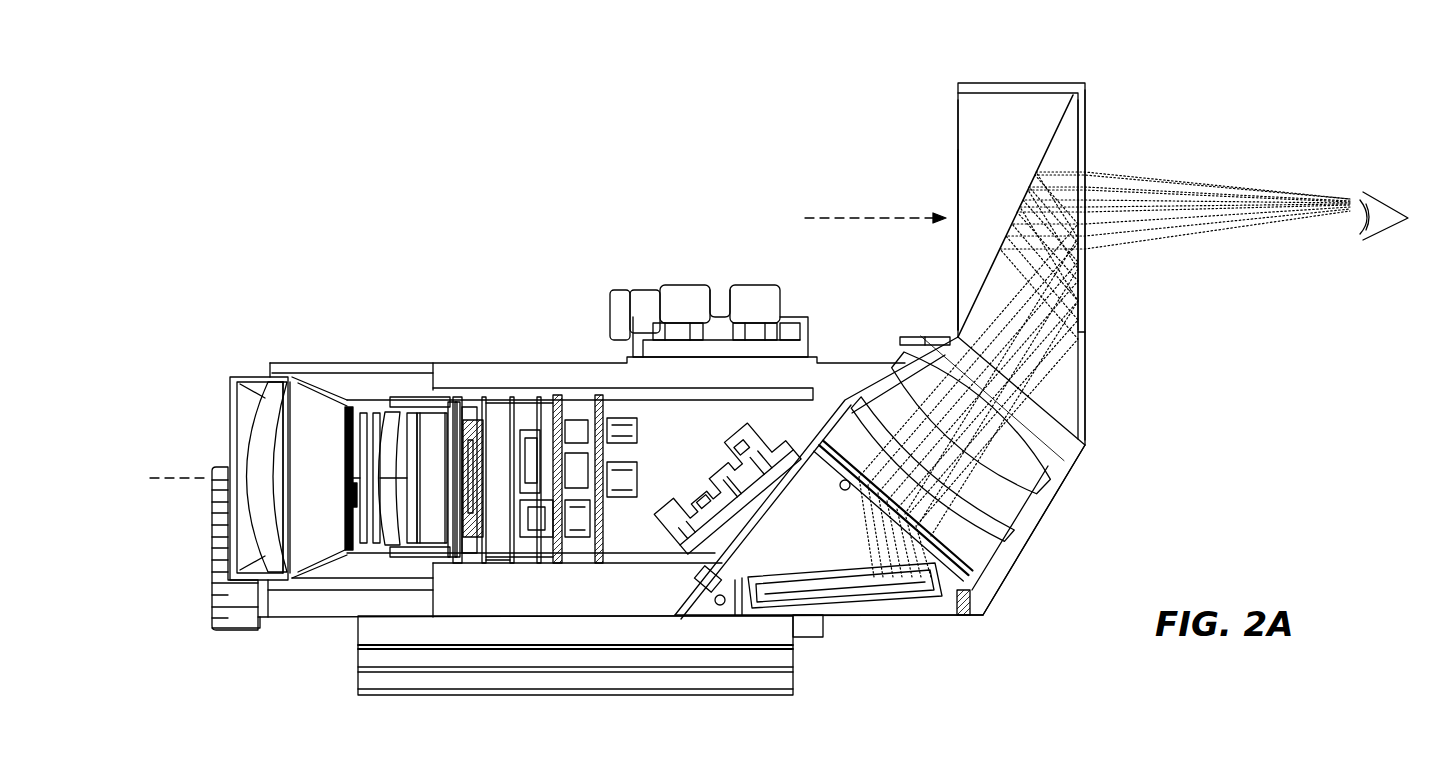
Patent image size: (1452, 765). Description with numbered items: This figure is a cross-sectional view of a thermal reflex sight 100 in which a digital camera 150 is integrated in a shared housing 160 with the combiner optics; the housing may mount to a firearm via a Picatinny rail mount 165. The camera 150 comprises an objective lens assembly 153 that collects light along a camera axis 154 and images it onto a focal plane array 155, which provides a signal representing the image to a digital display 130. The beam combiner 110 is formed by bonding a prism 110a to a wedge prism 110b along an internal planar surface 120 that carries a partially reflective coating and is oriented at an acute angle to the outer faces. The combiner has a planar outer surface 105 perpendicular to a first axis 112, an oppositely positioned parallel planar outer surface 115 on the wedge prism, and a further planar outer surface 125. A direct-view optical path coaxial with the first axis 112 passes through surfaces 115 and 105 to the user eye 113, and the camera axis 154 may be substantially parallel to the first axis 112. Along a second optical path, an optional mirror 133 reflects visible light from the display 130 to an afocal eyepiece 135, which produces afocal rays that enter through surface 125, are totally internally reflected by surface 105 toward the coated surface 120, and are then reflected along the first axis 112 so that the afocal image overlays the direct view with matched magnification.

The thermal reflex sight 100 is at (484, 127).
The planar outer surface 105 is at (1087, 152).
The beam combiner 110 is at (938, 162).
The prism 110a is at (1080, 122).
The wedge prism 110b is at (966, 125).
The first axis 112 is at (862, 216).
The user eye 113 is at (1380, 236).
The planar outer surface 115 is at (958, 282).
The internal planar surface 120 is at (1058, 105).
The planar outer surface 125 is at (1028, 386).
The digital display 130 is at (797, 430).
The mirror 133 is at (850, 578).
The afocal eyepiece 135 is at (1076, 482).
The digital camera 150 is at (432, 320).
The objective lens assembly 153 is at (266, 405).
The camera axis 154 is at (158, 470).
The focal plane array 155 is at (445, 445).
The shared housing 160 is at (538, 365).
The Picatinny rail mount 165 is at (357, 653).